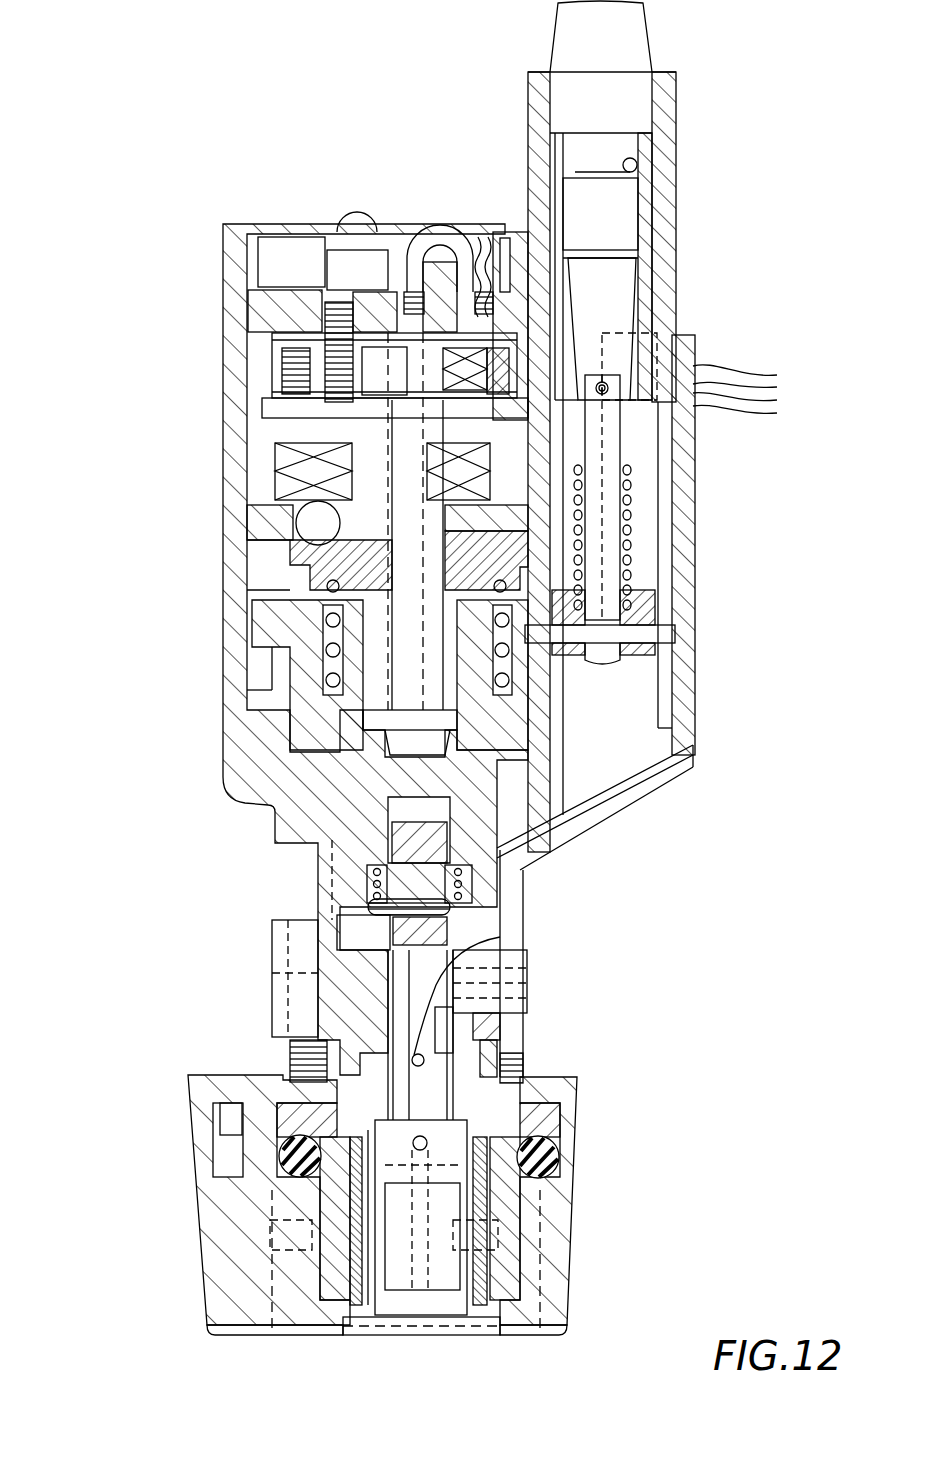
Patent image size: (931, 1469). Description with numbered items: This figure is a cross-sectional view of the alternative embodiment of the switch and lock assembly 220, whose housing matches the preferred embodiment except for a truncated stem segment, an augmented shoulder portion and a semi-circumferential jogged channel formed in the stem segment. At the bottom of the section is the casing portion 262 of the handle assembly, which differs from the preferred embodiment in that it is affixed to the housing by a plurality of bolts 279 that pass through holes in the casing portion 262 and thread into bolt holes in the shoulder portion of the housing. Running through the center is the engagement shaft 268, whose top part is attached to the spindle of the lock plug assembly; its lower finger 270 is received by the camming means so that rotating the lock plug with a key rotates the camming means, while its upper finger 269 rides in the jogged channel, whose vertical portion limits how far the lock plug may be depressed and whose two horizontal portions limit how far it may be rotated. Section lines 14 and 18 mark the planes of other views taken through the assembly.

The switch and lock assembly 220 is at (170, 822).
The lower finger 270 is at (370, 907).
The engagement shaft 268 is at (410, 968).
The upper finger 269 is at (500, 937).
The section line 14 is at (267, 1059).
The section line 18 is at (183, 1103).
The bolts 279 is at (270, 1243).
The casing portion 262 is at (205, 1283).